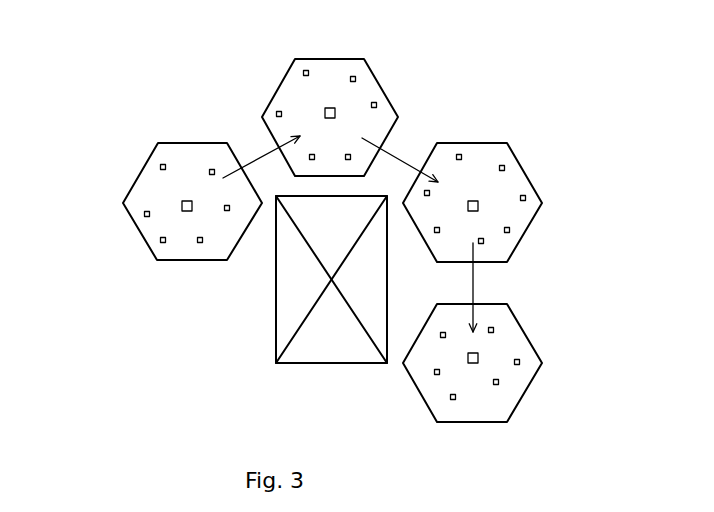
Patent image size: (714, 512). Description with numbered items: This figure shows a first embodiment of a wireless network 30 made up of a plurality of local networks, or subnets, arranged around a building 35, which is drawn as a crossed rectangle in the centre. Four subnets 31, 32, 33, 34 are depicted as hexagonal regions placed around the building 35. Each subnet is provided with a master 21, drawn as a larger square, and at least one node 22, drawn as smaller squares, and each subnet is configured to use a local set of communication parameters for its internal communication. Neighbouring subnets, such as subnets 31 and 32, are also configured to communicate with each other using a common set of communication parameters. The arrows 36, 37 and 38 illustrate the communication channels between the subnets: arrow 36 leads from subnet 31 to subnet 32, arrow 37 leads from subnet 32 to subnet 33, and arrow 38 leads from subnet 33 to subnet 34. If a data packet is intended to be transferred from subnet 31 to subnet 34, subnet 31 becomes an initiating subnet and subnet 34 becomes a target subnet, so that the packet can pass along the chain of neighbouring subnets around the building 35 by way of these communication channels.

The wireless network 30 is at (152, 53).
The master 21 is at (187, 213).
The node 22 is at (147, 217).
The subnet 31 is at (138, 192).
The subnet 32 is at (334, 72).
The subnet 33 is at (522, 218).
The subnet 34 is at (507, 410).
The building 35 is at (282, 327).
The arrow 36 is at (255, 155).
The arrow 37 is at (400, 153).
The arrow 38 is at (474, 283).